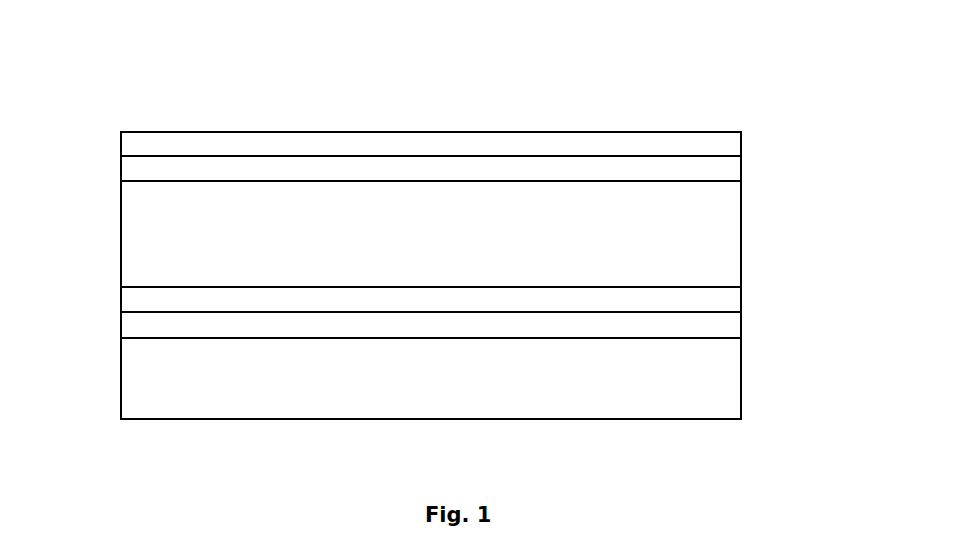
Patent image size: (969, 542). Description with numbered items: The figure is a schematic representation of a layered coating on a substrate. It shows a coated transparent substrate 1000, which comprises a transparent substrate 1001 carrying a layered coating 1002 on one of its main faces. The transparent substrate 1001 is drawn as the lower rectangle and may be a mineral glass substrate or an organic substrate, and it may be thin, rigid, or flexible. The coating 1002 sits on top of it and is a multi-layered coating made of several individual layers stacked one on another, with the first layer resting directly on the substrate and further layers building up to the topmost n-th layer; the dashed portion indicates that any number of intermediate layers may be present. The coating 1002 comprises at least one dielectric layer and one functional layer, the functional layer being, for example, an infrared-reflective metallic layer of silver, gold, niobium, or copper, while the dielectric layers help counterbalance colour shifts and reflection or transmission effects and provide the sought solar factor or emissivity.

The coated transparent substrate 1000 is at (170, 88).
The transparent substrate 1001 is at (121, 370).
The layered coating 1002 is at (113, 134).